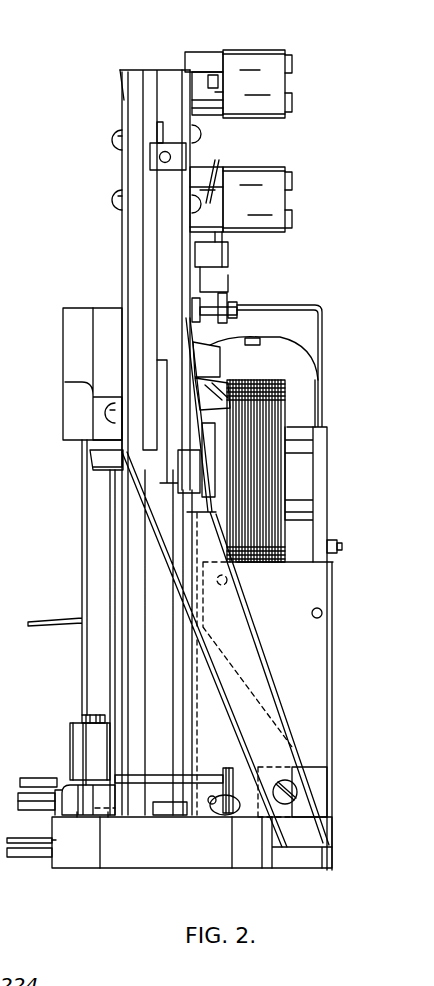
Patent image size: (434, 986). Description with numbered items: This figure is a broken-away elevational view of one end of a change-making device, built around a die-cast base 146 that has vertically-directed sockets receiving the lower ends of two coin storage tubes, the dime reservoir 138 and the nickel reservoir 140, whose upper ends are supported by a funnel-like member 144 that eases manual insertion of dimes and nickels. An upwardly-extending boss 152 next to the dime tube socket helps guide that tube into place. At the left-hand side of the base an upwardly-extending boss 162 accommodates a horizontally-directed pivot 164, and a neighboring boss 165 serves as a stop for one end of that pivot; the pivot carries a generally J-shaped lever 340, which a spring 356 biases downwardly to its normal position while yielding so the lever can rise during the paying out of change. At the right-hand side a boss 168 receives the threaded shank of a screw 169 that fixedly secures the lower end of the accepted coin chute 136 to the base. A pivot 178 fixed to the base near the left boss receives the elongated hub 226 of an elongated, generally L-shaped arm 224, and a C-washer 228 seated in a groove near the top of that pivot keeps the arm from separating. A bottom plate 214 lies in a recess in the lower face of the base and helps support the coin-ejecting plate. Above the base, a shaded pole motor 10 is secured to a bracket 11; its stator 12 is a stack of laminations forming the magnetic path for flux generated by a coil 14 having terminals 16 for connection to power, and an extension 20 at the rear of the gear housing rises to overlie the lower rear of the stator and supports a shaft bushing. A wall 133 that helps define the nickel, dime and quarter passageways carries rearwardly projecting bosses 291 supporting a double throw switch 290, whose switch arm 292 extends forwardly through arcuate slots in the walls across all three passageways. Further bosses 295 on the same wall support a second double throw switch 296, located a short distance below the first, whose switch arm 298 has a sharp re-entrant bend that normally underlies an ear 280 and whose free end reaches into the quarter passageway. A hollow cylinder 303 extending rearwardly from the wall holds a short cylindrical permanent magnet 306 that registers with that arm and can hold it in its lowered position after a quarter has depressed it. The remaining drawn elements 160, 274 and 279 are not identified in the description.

The motor 10 is at (285, 361).
The bracket 11 is at (320, 307).
The stator 12 is at (273, 417).
The coil 14 is at (316, 387).
The terminals 16 is at (260, 335).
The extension 20 is at (328, 537).
The wall 133 is at (165, 218).
The accepted coin chute 136 is at (290, 718).
The coin storage tube 138 is at (163, 643).
The coin storage tube 140 is at (87, 562).
The funnel-like member 144 is at (63, 385).
The base 146 is at (160, 863).
The boss 152 is at (190, 815).
The rods 160 is at (26, 829).
The boss 162 is at (77, 812).
The pivot 164 is at (88, 785).
The boss 165 is at (110, 812).
The boss 168 is at (320, 792).
The screw 169 is at (290, 783).
The pivot 178 is at (93, 715).
The bottom plate 214 is at (28, 858).
The arm 224 is at (37, 795).
The hub 226 is at (83, 738).
The C-washer 228 is at (75, 723).
The bar 274 is at (195, 260).
The bracket 279 is at (228, 285).
The ear 280 is at (228, 255).
The double throw switch 290 is at (273, 50).
The bosses 291 is at (195, 55).
The switch arm 292 is at (122, 105).
The bosses 295 is at (215, 165).
The double throw switch 296 is at (270, 166).
The switch arm 298 is at (240, 240).
The hollow cylinder 303 is at (195, 303).
The permanent magnet 306 is at (240, 303).
The J-shaped lever 340 is at (170, 780).
The spring 356 is at (203, 813).